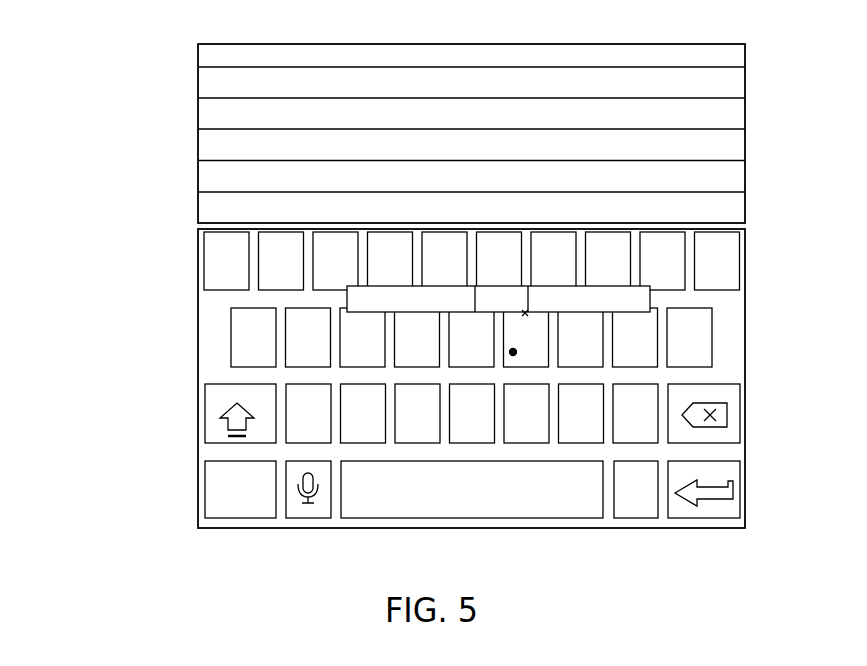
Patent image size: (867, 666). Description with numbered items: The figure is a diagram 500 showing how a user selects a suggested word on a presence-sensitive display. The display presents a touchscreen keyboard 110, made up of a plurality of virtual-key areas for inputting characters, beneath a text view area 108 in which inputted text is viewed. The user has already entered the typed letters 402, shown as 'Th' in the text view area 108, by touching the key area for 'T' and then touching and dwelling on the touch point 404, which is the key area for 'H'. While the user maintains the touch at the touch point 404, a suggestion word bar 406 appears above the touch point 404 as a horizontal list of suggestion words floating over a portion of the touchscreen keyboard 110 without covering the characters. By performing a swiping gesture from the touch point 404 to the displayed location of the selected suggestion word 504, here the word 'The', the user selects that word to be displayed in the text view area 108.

The diagram 500 is at (735, 35).
The text view area 108 is at (732, 128).
The typed letters 402 is at (200, 180).
The selected suggestion word 504 is at (510, 285).
The suggestion word bar 406 is at (630, 300).
The touchscreen keyboard 110 is at (198, 382).
The touch point 404 is at (513, 357).